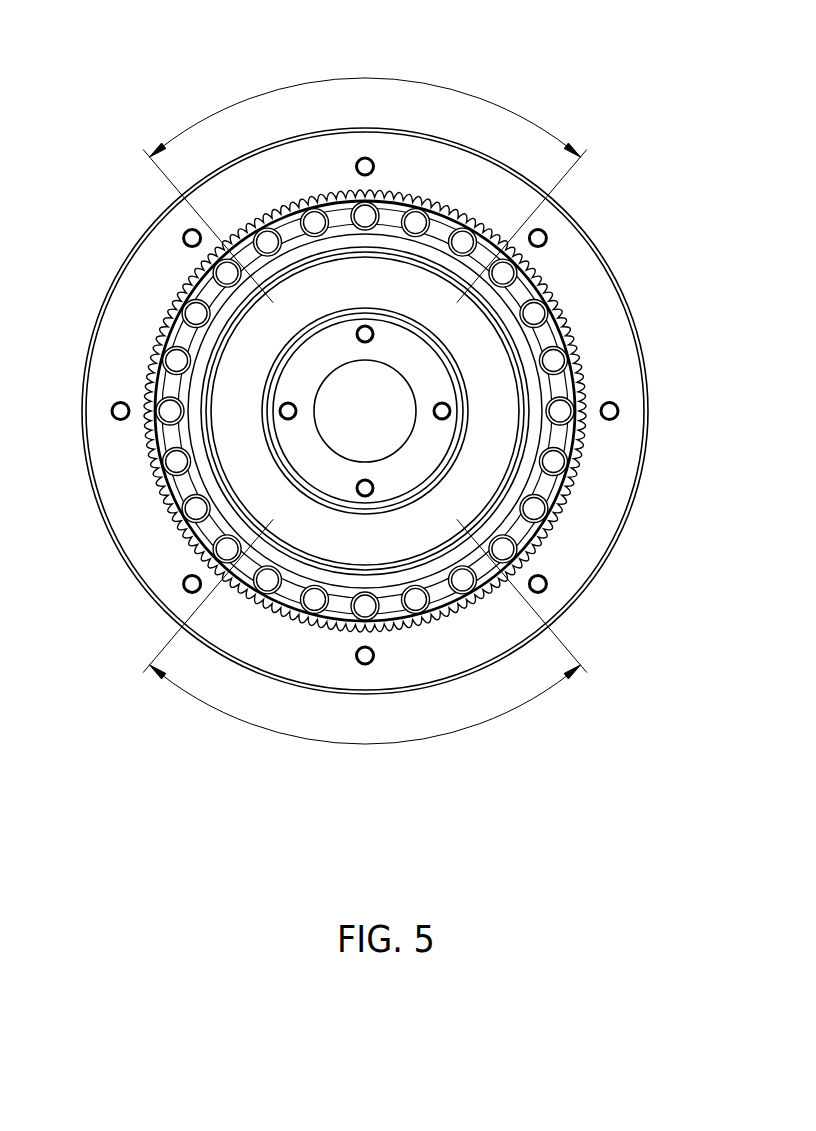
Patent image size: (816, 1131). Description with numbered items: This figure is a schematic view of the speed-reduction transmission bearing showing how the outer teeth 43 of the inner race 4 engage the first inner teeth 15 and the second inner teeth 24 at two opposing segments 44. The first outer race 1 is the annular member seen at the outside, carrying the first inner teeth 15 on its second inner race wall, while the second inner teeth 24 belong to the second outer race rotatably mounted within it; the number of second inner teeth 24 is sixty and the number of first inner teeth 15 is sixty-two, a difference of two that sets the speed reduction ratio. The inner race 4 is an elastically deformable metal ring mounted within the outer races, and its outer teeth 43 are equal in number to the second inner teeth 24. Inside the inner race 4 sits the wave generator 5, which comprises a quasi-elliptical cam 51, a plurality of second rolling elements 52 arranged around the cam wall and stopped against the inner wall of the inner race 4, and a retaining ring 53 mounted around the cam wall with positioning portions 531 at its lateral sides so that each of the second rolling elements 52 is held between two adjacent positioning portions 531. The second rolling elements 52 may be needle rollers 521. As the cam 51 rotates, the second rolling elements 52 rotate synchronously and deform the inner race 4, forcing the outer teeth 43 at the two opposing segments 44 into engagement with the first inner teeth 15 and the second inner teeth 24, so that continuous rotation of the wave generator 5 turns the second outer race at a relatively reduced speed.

The first outer race 1 is at (152, 570).
The inner race 4 is at (379, 411).
The outer teeth 43 is at (148, 400).
The first inner teeth 15 is at (150, 447).
The second inner teeth 24 is at (165, 503).
The wave generator 5 is at (454, 411).
The cam 51 is at (537, 385).
The retaining ring 53 is at (592, 387).
The positioning portions 531 is at (567, 435).
The second rolling elements 52 is at (575, 470).
The needle rollers 521 is at (365, 411).
The two opposing segments 44 is at (378, 78).